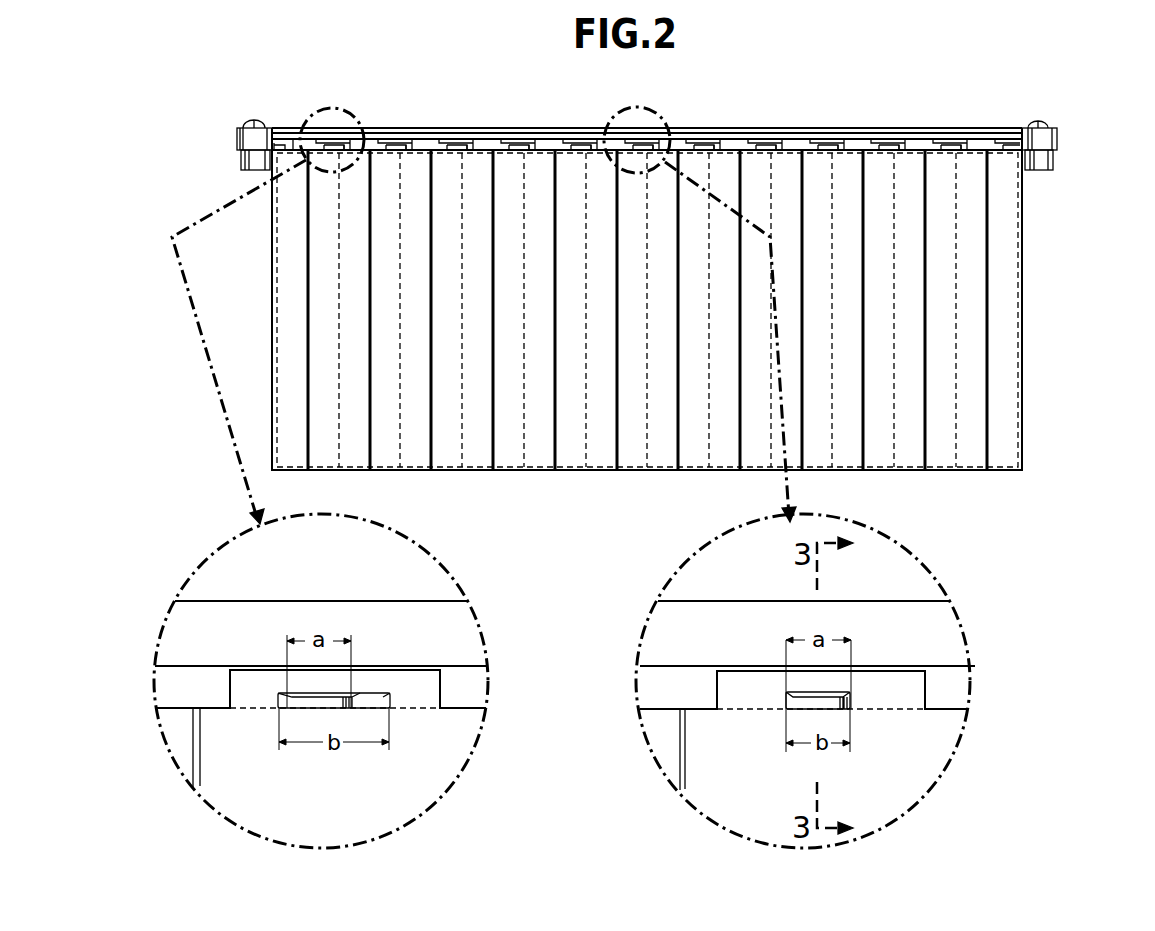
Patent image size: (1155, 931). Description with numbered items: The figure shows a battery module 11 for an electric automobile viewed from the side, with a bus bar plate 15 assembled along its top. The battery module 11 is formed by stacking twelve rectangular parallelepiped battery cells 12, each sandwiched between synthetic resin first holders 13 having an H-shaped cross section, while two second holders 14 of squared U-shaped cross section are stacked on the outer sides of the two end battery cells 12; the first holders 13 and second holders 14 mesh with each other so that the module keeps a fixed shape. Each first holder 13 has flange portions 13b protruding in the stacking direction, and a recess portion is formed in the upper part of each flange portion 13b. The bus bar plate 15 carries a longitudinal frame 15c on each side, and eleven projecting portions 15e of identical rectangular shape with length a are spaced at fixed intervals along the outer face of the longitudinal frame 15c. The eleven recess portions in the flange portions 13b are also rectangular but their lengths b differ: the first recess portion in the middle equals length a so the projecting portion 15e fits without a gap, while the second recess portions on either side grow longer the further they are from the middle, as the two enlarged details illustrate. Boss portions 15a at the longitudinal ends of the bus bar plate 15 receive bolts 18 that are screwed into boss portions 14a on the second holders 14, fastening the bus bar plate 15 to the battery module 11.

The battery module 11 is at (525, 120).
The battery cell 12 is at (283, 402).
The first holder 13 is at (570, 474).
The flange portion 13b is at (410, 160).
The second holder 14 is at (268, 330).
The boss portion 14a is at (240, 160).
The bus bar plate 15 is at (803, 125).
The boss portion 15a is at (237, 137).
The longitudinal frame 15c is at (562, 138).
The projecting portion 15e is at (325, 698).
The bolt 18 is at (254, 121).